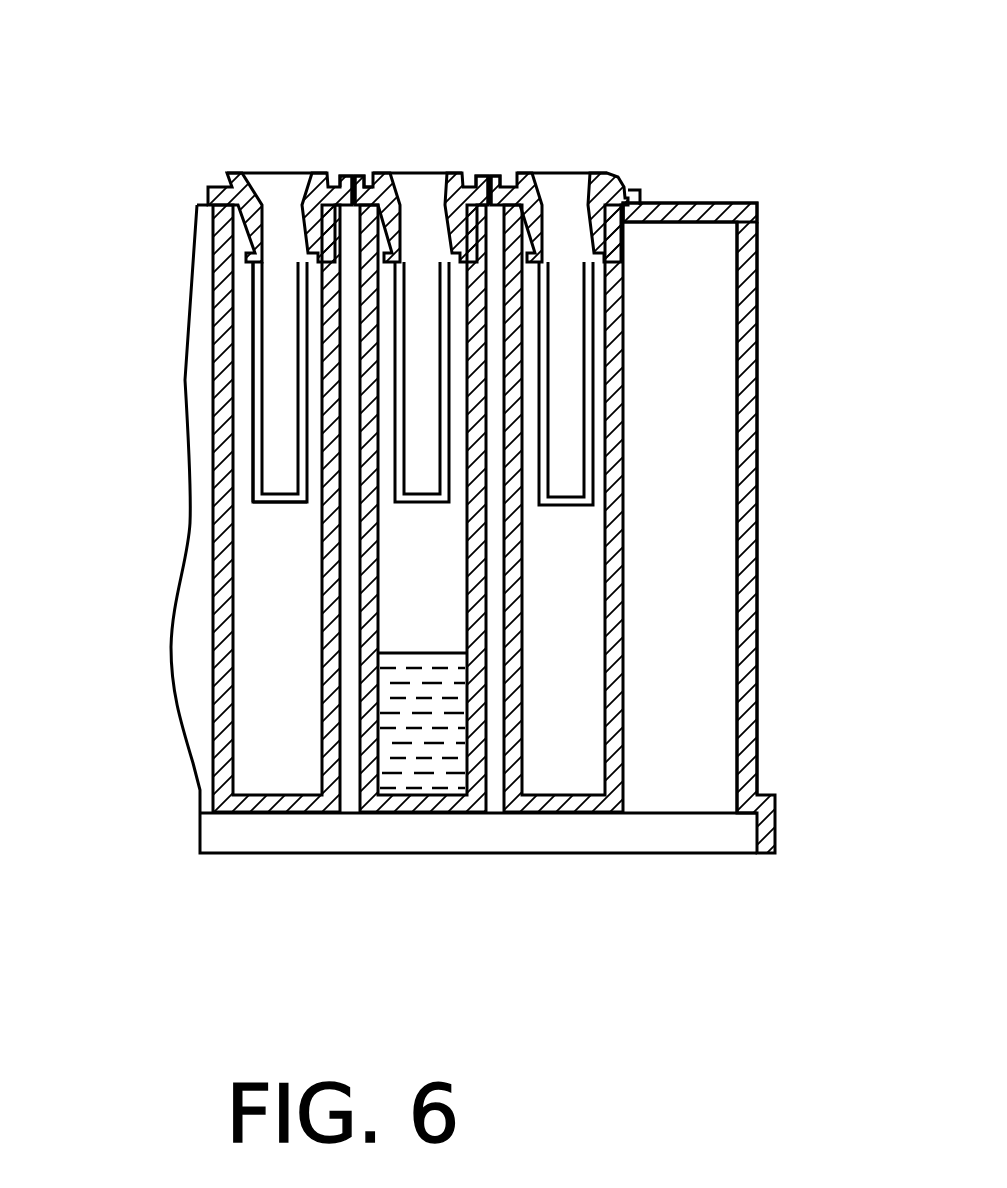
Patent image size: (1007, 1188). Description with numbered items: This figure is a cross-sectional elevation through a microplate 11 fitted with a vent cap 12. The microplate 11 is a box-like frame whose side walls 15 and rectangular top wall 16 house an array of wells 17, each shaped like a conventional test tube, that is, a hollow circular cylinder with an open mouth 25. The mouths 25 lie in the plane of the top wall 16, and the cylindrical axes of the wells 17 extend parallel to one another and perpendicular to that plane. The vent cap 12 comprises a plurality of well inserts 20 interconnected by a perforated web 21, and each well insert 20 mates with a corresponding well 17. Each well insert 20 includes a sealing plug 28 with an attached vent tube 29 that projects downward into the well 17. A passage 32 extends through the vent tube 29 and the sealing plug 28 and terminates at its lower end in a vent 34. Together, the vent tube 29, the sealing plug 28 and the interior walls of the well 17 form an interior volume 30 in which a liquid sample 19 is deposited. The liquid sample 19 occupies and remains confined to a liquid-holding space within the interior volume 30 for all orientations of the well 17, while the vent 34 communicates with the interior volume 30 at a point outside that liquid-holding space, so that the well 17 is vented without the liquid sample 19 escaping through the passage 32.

The microplate 11 is at (755, 222).
The vent cap 12 is at (232, 180).
The side wall 15 is at (757, 535).
The top wall 16 is at (680, 205).
The well 17 is at (620, 745).
The liquid sample 19 is at (430, 782).
The well insert 20 is at (515, 178).
The perforated web 21 is at (488, 178).
The open mouth 25 is at (616, 186).
The sealing plug 28 is at (371, 178).
The vent tube 29 is at (258, 415).
The interior volume 30 is at (262, 712).
The passage 32 is at (275, 347).
The vent 34 is at (270, 507).